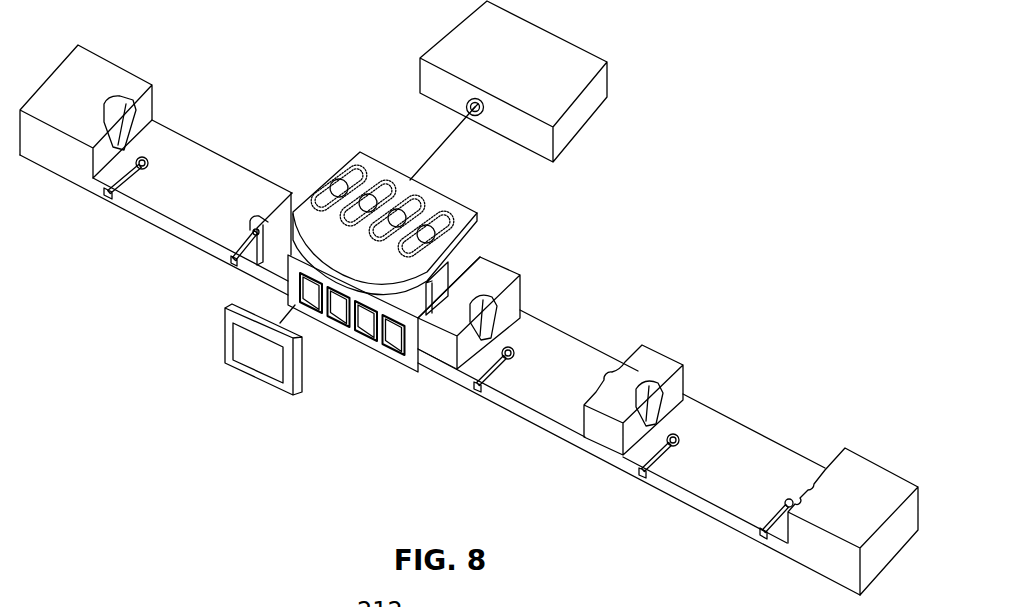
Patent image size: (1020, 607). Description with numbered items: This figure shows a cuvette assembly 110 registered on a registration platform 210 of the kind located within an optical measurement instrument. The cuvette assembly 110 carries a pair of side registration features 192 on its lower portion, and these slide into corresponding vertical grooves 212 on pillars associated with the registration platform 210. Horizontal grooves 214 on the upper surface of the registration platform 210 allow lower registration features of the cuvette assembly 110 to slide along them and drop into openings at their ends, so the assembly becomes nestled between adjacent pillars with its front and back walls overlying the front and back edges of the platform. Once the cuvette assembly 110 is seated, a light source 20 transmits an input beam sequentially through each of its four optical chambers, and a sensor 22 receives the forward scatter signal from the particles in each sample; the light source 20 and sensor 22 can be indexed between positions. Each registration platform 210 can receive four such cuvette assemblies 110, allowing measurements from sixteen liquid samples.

The registration platform 210 is at (93, 85).
The light source 20 is at (573, 43).
The cuvette assembly 110 is at (440, 213).
The side registration features 192 is at (453, 280).
The vertical grooves 212 is at (625, 363).
The horizontal grooves 214 is at (475, 381).
The sensor 22 is at (220, 340).